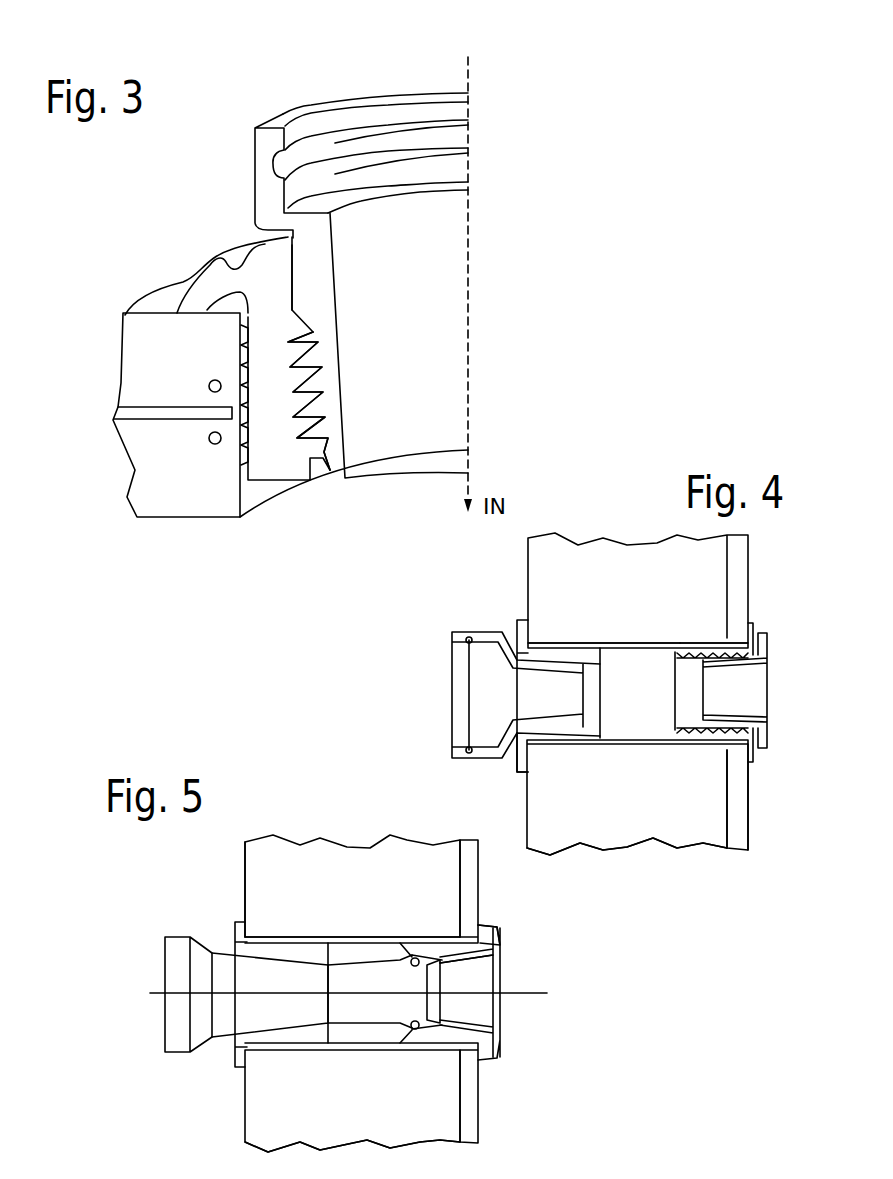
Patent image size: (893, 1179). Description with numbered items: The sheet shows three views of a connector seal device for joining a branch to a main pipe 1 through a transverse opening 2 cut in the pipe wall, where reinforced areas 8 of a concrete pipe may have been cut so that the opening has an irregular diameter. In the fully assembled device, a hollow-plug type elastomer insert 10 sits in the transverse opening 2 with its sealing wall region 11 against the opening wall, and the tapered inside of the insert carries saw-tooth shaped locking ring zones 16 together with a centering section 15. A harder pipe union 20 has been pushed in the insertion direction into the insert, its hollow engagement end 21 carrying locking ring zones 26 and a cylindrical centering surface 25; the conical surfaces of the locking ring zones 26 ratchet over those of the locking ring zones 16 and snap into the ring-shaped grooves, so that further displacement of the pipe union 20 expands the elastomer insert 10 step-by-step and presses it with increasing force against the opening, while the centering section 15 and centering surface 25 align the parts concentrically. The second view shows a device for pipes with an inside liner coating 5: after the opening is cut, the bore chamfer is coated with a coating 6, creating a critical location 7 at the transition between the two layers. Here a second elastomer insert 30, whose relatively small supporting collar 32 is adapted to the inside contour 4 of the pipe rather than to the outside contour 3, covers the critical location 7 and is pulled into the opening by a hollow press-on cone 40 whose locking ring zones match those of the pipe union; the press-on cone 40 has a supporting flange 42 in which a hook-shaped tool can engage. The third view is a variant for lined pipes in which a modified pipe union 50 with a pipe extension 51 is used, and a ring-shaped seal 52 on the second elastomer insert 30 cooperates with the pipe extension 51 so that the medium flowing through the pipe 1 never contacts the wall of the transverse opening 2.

In FIG. 3, the main pipe 1 is at (178, 524).
In FIG. 4, the main pipe 1 is at (682, 866).
In FIG. 5, the main pipe 1 is at (230, 1128).
In FIG. 4, the transverse opening 2 is at (632, 738).
In FIG. 5, the transverse opening 2 is at (320, 1037).
In FIG. 4, the outside contour 3 is at (527, 792).
In FIG. 5, the outside contour 3 is at (243, 885).
In FIG. 4, the inside contour 4 is at (748, 775).
In FIG. 5, the inside contour 4 is at (478, 1083).
In FIG. 4, the inside liner coating 5 is at (740, 565).
In FIG. 5, the inside liner coating 5 is at (470, 888).
In FIG. 4, the coating 6 is at (620, 640).
In FIG. 5, the coating 6 is at (280, 940).
In FIG. 4, the critical location 7 is at (718, 640).
In FIG. 5, the critical location 7 is at (455, 936).
In FIG. 3, the reinforced areas 8 is at (209, 441).
In FIG. 3, the elastomer insert 10 is at (210, 252).
In FIG. 4, the elastomer insert 10 is at (520, 625).
In FIG. 5, the elastomer insert 10 is at (237, 937).
In FIG. 3, the sealing wall region 11 is at (283, 465).
In FIG. 3, the centering section 15 is at (247, 328).
In FIG. 3, the locking ring zones 16 is at (320, 375).
In FIG. 3, the pipe union 20 is at (287, 108).
In FIG. 4, the pipe union 20 is at (455, 700).
In FIG. 3, the engagement end 21 is at (345, 478).
In FIG. 3, the centering surface 25 is at (285, 250).
In FIG. 3, the locking ring zones 26 is at (369, 399).
In FIG. 4, the second elastomer insert 30 is at (689, 666).
In FIG. 5, the second elastomer insert 30 is at (500, 942).
In FIG. 4, the supporting collar 32 is at (752, 628).
In FIG. 4, the press-on cone 40 is at (711, 686).
In FIG. 5, the press-on cone 40 is at (500, 970).
In FIG. 4, the supporting flange 42 is at (768, 656).
In FIG. 5, the modified pipe union 50 is at (204, 1060).
In FIG. 5, the pipe extension 51 is at (367, 1001).
In FIG. 5, the ring-shaped seal 52 is at (411, 958).